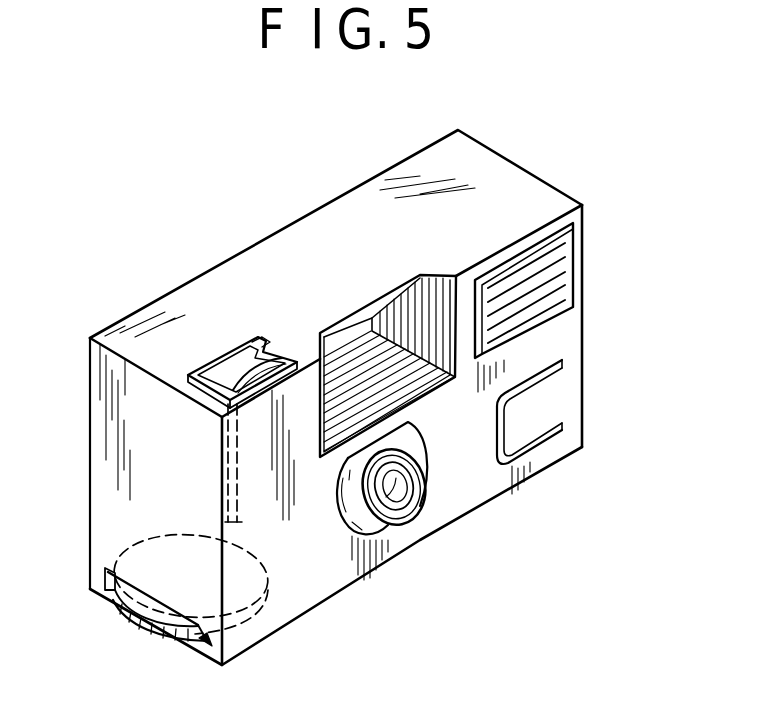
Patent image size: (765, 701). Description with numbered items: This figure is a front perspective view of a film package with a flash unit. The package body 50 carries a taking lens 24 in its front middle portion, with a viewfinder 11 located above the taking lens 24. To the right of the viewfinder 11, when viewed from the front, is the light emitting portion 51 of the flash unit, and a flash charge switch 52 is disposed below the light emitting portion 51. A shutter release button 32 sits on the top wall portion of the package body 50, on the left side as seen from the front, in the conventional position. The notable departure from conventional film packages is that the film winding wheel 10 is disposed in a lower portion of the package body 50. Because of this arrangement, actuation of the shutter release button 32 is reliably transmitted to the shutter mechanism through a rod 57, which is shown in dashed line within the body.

The package body 50 is at (315, 195).
The viewfinder 11 is at (352, 355).
The shutter release button 32 is at (227, 368).
The rod 57 is at (230, 462).
The film winding wheel 10 is at (120, 622).
The taking lens 24 is at (398, 512).
The light emitting portion 51 is at (560, 282).
The flash charge switch 52 is at (540, 403).